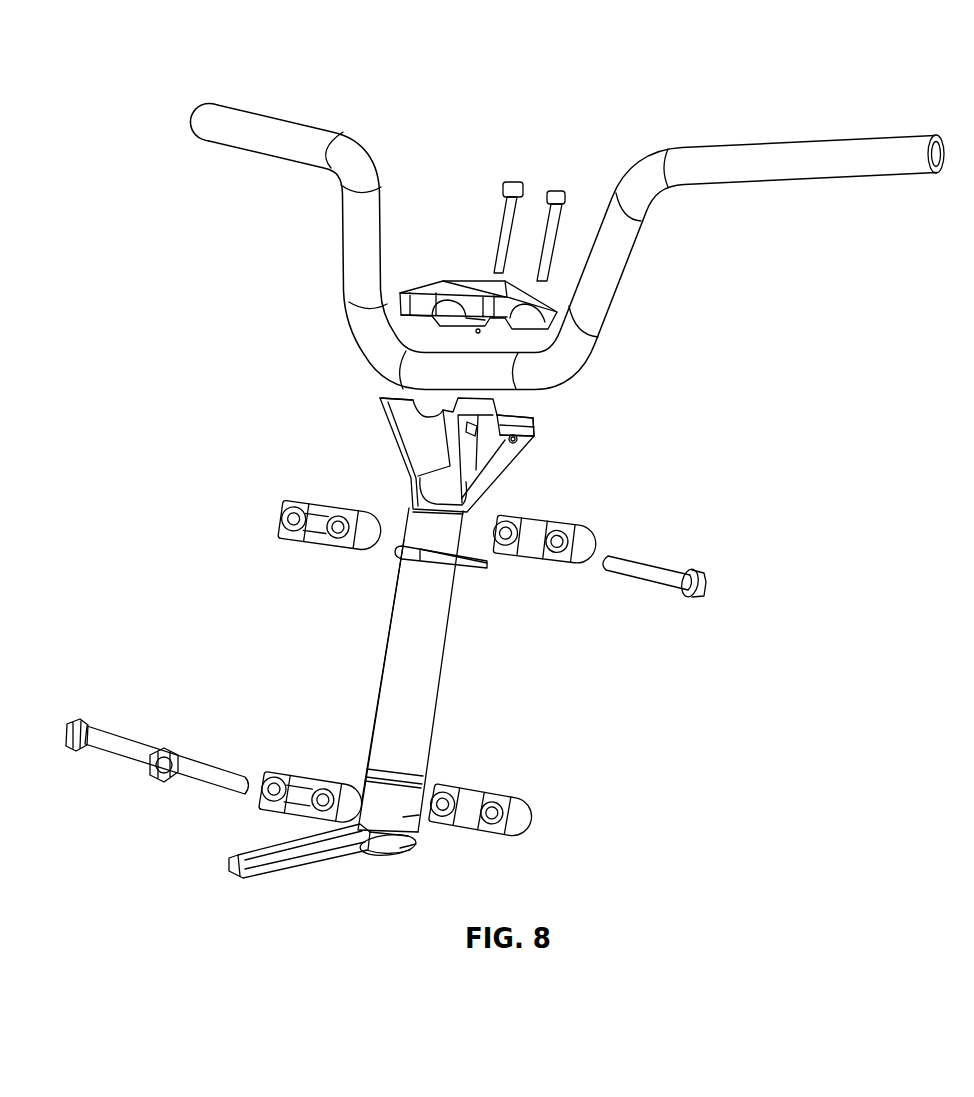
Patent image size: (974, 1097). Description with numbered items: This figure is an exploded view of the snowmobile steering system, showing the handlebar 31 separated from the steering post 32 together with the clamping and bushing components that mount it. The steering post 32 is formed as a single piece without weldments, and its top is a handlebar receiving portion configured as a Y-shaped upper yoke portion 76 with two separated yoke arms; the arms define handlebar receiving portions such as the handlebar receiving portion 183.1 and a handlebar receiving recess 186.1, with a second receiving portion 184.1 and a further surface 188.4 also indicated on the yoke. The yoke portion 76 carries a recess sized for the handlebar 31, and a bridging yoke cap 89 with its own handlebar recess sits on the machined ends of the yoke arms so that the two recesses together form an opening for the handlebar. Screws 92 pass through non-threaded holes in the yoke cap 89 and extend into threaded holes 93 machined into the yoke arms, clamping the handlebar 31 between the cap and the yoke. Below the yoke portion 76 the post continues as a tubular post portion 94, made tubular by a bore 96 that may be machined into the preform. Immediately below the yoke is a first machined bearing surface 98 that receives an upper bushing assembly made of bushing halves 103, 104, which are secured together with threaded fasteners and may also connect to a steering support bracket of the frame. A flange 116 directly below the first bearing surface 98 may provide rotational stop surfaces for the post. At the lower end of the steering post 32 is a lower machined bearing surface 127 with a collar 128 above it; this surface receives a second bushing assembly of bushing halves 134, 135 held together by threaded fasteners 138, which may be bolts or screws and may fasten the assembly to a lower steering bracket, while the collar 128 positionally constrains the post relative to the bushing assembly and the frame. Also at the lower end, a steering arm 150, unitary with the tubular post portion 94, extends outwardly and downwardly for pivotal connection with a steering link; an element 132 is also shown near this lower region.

The handlebar 31 is at (703, 146).
The steering post 32 is at (423, 648).
The upper yoke portion 76 is at (500, 468).
The yoke cap 89 is at (447, 283).
The screws 92 is at (515, 180).
The threaded holes 93 is at (520, 445).
The tubular post portion 94 is at (442, 588).
The bore 96 is at (382, 851).
The first machined bearing surface 98 is at (427, 518).
The bushing half 103 is at (560, 562).
The bushing half 104 is at (318, 545).
The flange 116 is at (398, 553).
The lower machined bearing surface 127 is at (413, 818).
The collar 128 is at (424, 775).
The lower mounting tab 132 is at (414, 843).
The bushing half 134 is at (296, 772).
The bushing half 135 is at (490, 792).
The threaded fasteners 138 is at (120, 728).
The steering arm 150 is at (252, 858).
The handlebar receiving portion 183.1 is at (380, 401).
The right clamp tab 184.1 is at (536, 424).
The handlebar receiving recess 186.1 is at (500, 408).
The clamp recess 188.4 is at (538, 407).